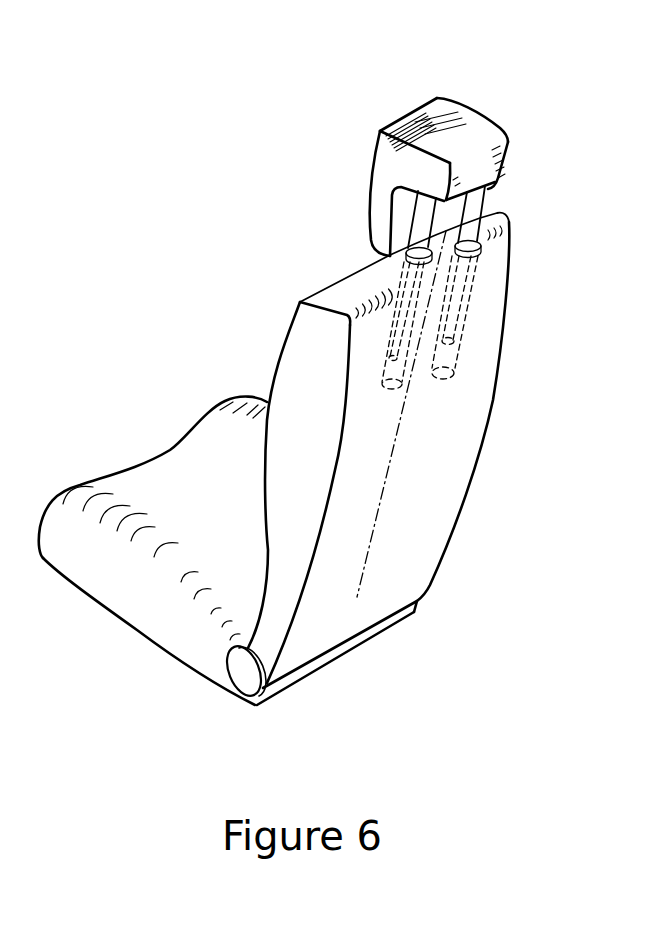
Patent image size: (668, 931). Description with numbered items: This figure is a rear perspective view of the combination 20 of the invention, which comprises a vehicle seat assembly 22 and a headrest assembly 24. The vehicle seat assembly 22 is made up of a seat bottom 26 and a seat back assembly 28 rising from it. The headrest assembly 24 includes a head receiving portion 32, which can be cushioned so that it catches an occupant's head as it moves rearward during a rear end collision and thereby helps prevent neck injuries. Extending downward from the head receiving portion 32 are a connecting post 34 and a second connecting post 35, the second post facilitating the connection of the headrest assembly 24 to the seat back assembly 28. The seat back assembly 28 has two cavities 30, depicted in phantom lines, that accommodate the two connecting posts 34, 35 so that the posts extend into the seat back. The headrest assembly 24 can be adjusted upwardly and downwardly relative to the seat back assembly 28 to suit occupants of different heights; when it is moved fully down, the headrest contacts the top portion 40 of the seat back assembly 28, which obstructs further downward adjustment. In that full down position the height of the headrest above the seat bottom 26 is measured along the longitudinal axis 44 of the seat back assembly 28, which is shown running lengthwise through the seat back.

The combination 20 is at (210, 250).
The vehicle seat assembly 22 is at (470, 599).
The headrest assembly 24 is at (308, 92).
The seat bottom 26 is at (140, 603).
The seat back assembly 28 is at (320, 630).
The cavity 30 is at (388, 387).
The head receiving portion 32 is at (475, 120).
The connecting post 34 is at (413, 210).
The second connecting post 35 is at (484, 208).
The top portion 40 is at (352, 278).
The longitudinal axis 44 is at (377, 517).